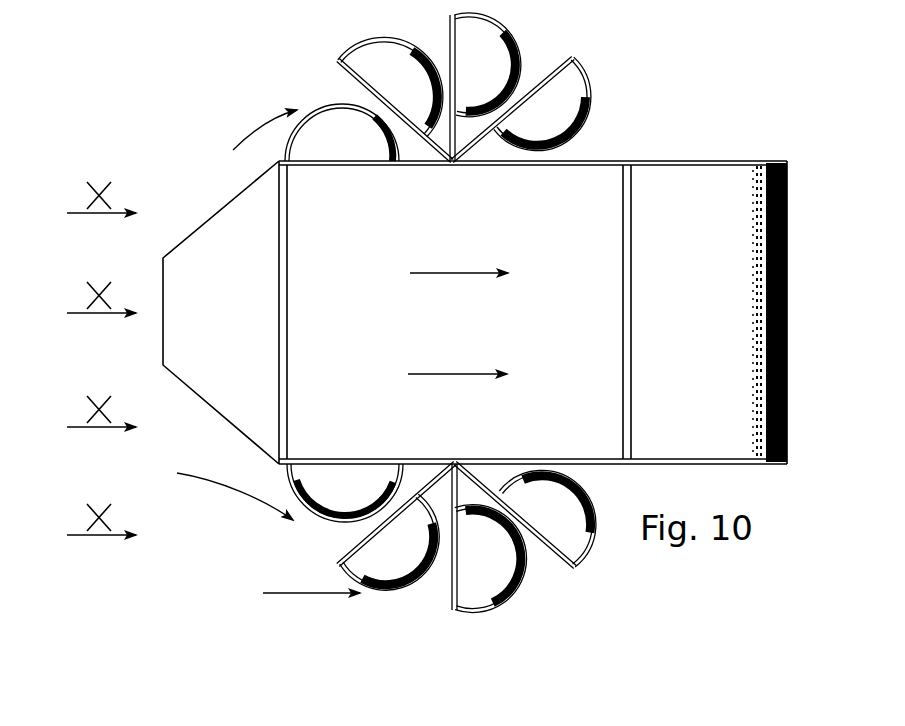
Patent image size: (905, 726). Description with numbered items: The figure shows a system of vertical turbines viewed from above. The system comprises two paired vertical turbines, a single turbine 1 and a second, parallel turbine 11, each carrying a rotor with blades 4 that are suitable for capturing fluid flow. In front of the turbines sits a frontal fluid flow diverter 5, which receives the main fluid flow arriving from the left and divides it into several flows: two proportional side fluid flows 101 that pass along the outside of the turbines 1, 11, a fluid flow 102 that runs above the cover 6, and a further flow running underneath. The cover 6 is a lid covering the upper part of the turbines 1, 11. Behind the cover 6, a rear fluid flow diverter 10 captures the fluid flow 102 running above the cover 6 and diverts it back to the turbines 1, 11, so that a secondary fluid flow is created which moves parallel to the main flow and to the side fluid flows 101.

The single turbine 1 is at (337, 90).
The blades 4 is at (593, 113).
The frontal fluid flow diverter 5 is at (233, 220).
The cover 6 is at (588, 193).
The rear fluid flow diverter 10 is at (697, 183).
The second parallel turbine 11 is at (353, 537).
The side fluid flows 101 is at (268, 364).
The fluid flow running above the cover 102 is at (458, 309).